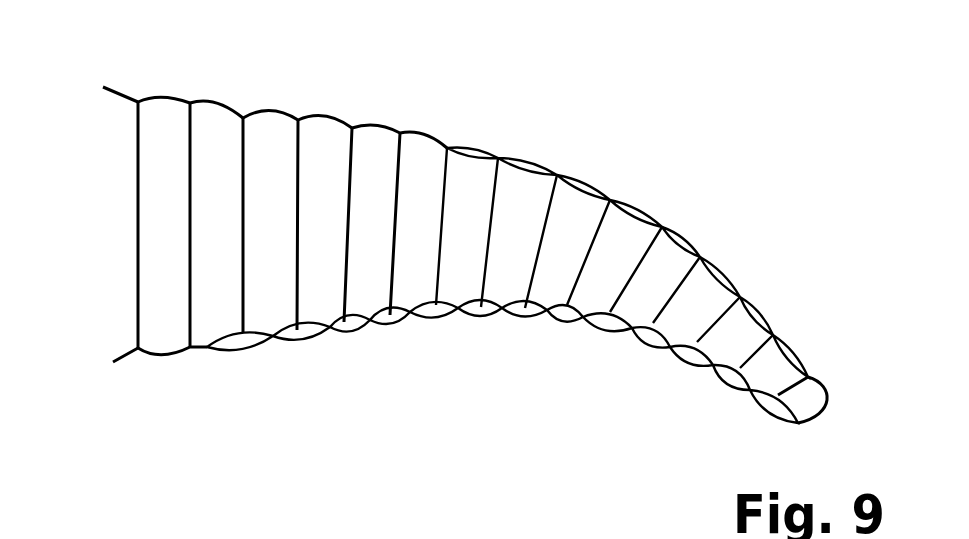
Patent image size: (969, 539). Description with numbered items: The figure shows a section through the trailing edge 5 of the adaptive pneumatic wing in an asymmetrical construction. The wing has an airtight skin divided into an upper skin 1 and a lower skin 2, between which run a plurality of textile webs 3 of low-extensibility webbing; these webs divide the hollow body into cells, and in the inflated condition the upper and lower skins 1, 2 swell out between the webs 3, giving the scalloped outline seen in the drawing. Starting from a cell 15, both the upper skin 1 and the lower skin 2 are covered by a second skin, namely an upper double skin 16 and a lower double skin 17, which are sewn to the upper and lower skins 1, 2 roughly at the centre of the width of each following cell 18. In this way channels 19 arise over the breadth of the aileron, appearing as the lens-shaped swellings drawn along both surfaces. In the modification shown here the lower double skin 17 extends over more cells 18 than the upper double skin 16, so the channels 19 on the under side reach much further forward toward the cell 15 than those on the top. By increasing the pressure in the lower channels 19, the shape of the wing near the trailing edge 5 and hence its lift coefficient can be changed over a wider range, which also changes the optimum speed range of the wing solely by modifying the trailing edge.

The upper skin 1 is at (222, 102).
The lower skin 2 is at (173, 357).
The textile webs 3 is at (243, 210).
The trailing edge 5 is at (807, 422).
The cell 15 is at (163, 313).
The upper double skin 16 is at (670, 220).
The lower double skin 17 is at (392, 322).
The cells 18 is at (218, 305).
The channels 19 is at (480, 308).